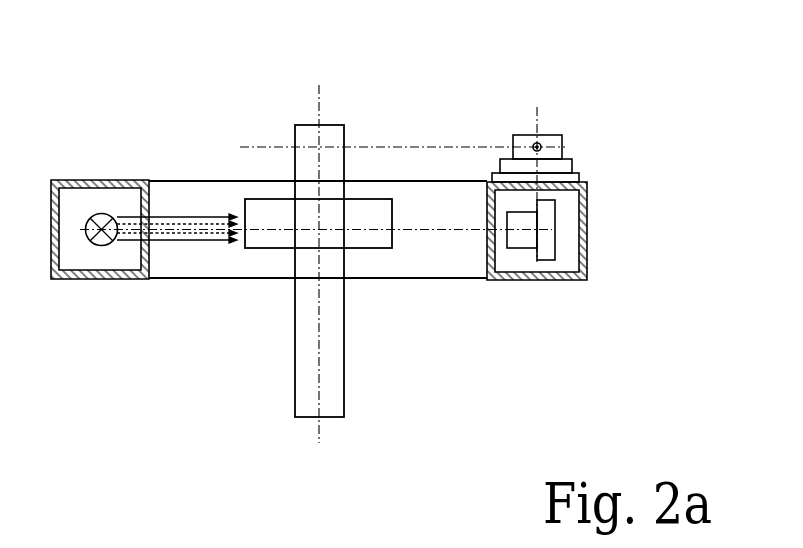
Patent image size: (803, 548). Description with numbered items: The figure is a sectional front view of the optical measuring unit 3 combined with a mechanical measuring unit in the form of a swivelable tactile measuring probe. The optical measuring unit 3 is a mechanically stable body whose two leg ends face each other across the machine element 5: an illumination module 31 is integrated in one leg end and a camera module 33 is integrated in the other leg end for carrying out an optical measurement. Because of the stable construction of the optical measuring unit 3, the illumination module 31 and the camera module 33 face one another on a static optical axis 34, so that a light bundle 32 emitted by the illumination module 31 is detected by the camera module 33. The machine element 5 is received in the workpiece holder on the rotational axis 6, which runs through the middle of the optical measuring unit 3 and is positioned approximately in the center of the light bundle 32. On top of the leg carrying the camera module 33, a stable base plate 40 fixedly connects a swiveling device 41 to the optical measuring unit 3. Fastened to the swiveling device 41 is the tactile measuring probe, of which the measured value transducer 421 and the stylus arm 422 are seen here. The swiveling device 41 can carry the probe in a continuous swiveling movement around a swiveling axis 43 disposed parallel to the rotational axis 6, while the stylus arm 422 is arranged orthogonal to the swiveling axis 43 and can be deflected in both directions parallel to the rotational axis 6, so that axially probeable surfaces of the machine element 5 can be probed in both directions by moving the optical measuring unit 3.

The optical measuring unit 3 is at (218, 270).
The machine element 5 is at (330, 307).
The rotational axis 6 is at (317, 100).
The illumination module 31 is at (102, 242).
The light bundle 32 is at (192, 213).
The camera module 33 is at (548, 247).
The static optical axis 34 is at (438, 230).
The base plate 40 is at (573, 177).
The swiveling device 41 is at (567, 166).
The measured value transducer 421 is at (563, 150).
The stylus arm 422 is at (539, 144).
The swiveling axis 43 is at (532, 119).